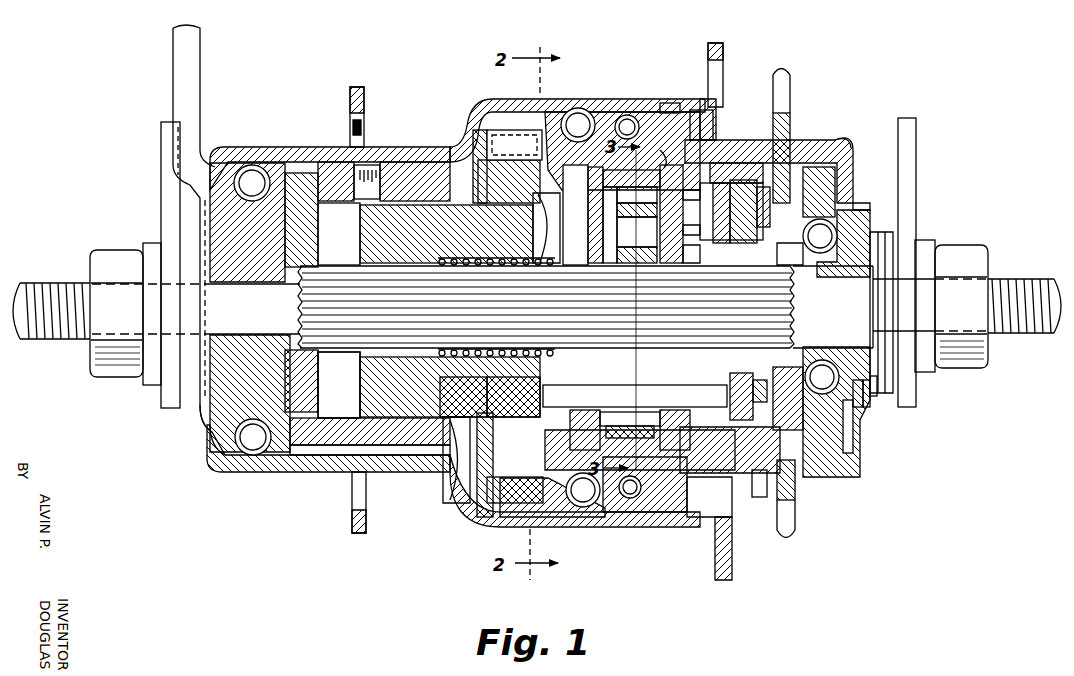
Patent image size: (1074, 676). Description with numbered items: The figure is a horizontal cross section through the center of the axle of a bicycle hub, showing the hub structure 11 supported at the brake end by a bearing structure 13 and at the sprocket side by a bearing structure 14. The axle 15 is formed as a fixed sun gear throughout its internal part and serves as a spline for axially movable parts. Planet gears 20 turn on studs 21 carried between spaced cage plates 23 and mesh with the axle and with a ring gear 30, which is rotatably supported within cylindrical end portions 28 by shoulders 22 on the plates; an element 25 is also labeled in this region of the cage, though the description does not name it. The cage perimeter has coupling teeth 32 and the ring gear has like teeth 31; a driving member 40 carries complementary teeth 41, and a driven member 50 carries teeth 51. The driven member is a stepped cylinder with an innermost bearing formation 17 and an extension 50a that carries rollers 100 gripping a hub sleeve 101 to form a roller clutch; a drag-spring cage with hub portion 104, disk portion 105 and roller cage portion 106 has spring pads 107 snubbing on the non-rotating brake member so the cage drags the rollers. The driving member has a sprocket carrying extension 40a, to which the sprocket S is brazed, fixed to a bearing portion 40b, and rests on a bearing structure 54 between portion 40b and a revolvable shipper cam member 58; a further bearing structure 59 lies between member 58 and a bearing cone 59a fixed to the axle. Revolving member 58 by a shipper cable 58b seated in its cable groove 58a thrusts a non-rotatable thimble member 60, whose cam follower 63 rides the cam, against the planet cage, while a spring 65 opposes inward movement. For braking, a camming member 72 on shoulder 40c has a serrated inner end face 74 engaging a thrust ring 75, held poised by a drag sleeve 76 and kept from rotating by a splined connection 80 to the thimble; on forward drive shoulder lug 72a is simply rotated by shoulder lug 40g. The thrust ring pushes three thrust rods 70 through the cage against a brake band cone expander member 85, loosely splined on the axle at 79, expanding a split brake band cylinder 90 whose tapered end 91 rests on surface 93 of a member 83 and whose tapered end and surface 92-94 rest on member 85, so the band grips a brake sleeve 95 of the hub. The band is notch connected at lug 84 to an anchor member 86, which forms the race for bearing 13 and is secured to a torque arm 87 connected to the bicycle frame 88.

The hub structure 11 is at (453, 120).
The bearing structure 13 is at (255, 456).
The bearing structure 14 is at (632, 117).
The axle 15 is at (58, 339).
The innermost bearing formation 17 is at (582, 110).
The planet gears 20 is at (603, 200).
The studs 21 is at (598, 238).
The shoulders 22 is at (696, 225).
The cage structure plates 23 is at (603, 212).
The ratchet 25 is at (713, 201).
The cylindrical end portions 28 is at (600, 437).
The ring gear 30 is at (696, 189).
The ring gear coupling teeth 31 is at (660, 150).
The cage coupling teeth 32 is at (671, 105).
The driving member 40 is at (769, 175).
The sprocket carrying extension 40a is at (839, 139).
The bearing portion 40b is at (842, 168).
The shoulder 40c is at (789, 140).
The shoulder lug 40g is at (846, 472).
The driving member clutch teeth 41 is at (682, 213).
The driven member 50 is at (520, 162).
The roller camming end portion 50a is at (553, 228).
The driven member clutch teeth 51 is at (583, 213).
The bearing structure 54 is at (853, 445).
The shipper cam member 58 is at (861, 218).
The cable groove 58a is at (853, 206).
The shipper cable 58b is at (860, 430).
The bearing structure 59 is at (868, 410).
The bearing cone 59a is at (878, 398).
The thimble member 60 is at (696, 245).
The cam follower 63 is at (790, 290).
The spring 65 is at (454, 357).
The thrust rods 70 is at (656, 392).
The camming member 72 is at (773, 160).
The shoulder lug 72a is at (806, 252).
The inner end face 74 is at (797, 480).
The pressure or thrust ring 75 is at (750, 477).
The drag sleeve 76 is at (753, 495).
The loose spline 79 is at (362, 262).
The loose splined connection 80 is at (781, 257).
The brake cone member 83 is at (328, 236).
The lug 84 is at (335, 162).
The brake band cone expander member 85 is at (360, 365).
The anchor member 86 is at (203, 432).
The torque arm 87 is at (178, 68).
The bicycle frame 88 is at (161, 156).
The split brake band cylinder 90 is at (321, 455).
The tapered inner end portion 91 is at (320, 418).
The tapered surface 93 is at (339, 385).
The tapered end portion and tapered surface 92-94 is at (423, 162).
The brake sleeve 95 is at (283, 465).
The rollers 100 is at (495, 130).
The hub sleeve 101 is at (480, 130).
The hub portion 104 is at (481, 362).
The disk portion 105 is at (445, 475).
The roller cage portion 106 is at (502, 503).
The spring pads 107 is at (513, 362).
The sprocket S is at (794, 540).